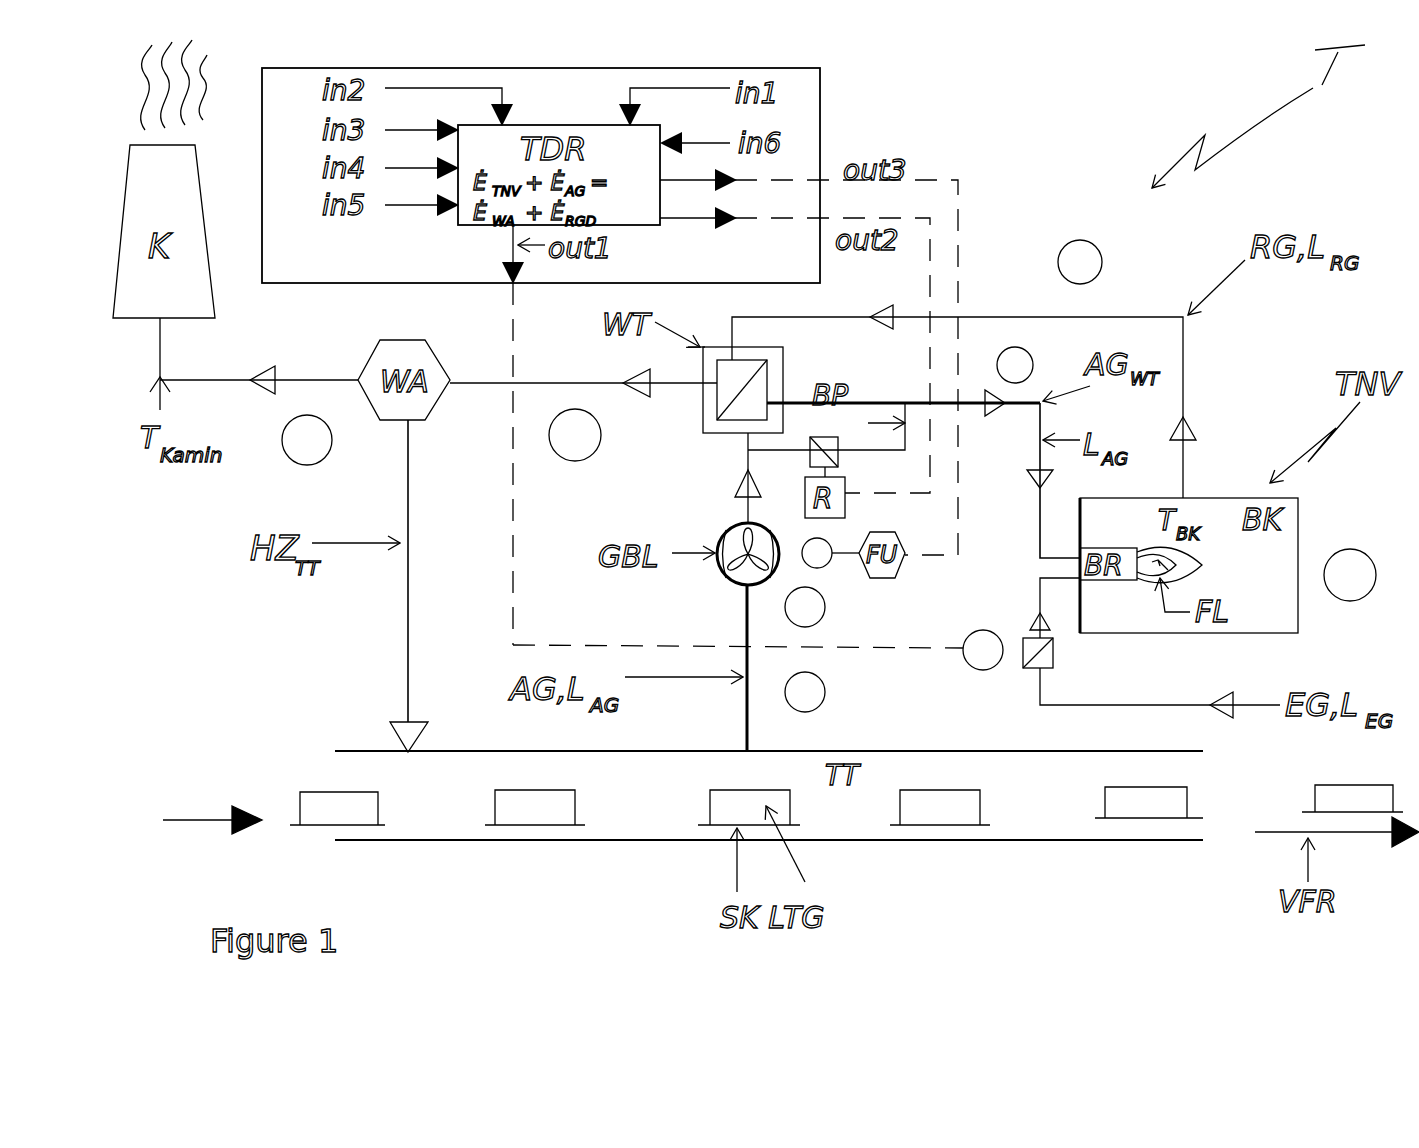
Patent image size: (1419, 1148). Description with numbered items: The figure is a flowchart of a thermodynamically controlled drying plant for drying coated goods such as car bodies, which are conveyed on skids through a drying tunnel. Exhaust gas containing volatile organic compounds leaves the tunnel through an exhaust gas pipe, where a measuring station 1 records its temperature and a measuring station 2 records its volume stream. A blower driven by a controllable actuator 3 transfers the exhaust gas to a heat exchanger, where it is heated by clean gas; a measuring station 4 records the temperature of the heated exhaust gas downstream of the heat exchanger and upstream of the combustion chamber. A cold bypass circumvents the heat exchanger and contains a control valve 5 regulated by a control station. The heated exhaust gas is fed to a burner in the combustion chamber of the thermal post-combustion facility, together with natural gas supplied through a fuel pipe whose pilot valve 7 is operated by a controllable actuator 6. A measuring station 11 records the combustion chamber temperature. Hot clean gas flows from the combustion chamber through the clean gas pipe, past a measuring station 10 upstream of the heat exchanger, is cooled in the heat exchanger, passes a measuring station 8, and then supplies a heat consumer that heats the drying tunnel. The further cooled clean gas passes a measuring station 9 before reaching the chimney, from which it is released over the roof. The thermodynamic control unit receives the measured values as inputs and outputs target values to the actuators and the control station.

The measuring station 1 is at (747, 692).
The measuring station 2 is at (747, 607).
The actuator 3 is at (780, 553).
The measuring station 4 is at (1015, 403).
The control valve 5 is at (842, 465).
The actuator 6 is at (1023, 650).
The pilot valve 7 is at (1056, 655).
The measuring station 8 is at (575, 383).
The measuring station 9 is at (307, 380).
The measuring station 10 is at (1080, 317).
The measuring station 11 is at (1250, 575).